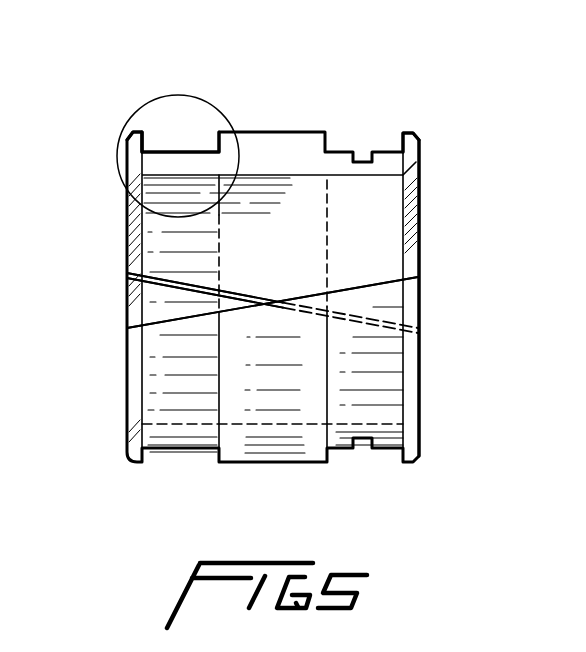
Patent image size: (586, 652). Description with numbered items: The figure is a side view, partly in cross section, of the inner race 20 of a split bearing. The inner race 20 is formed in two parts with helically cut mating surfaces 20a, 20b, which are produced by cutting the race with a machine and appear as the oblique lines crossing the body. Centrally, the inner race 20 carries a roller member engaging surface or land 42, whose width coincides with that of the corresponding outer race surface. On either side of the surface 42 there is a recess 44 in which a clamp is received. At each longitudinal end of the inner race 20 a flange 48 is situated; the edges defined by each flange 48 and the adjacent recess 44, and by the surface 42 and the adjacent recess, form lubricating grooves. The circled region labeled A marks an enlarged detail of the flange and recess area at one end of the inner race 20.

The inner race 20 is at (420, 207).
The helically cut mating surface 20a is at (175, 287).
The helically cut mating surface 20b is at (372, 320).
The roller member engaging surface 42 is at (295, 148).
The recess 44 is at (187, 140).
The flange 48 is at (132, 130).
The detail region A is at (118, 172).